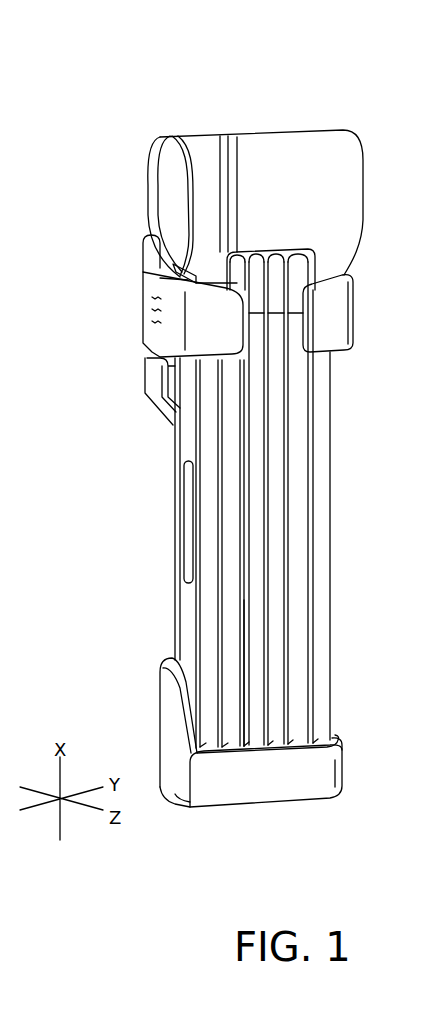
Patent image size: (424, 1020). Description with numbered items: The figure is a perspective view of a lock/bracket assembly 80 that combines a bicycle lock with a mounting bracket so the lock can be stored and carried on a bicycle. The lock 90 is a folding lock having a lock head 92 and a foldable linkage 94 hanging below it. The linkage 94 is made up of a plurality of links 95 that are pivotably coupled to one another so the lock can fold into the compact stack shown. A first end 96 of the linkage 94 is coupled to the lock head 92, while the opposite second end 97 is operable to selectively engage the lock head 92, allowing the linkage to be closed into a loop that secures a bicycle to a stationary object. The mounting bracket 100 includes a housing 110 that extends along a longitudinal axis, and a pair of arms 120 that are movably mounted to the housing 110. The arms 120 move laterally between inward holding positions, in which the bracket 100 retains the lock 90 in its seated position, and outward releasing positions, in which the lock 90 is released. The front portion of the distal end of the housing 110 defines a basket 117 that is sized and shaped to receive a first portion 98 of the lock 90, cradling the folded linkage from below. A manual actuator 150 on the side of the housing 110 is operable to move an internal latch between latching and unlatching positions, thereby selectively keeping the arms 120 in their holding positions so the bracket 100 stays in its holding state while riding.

The lock/bracket assembly 80 is at (188, 90).
The lock 90 is at (122, 158).
The lock head 92 is at (364, 156).
The foldable linkage 94 is at (166, 497).
The links 95 is at (248, 592).
The first end 96 is at (350, 270).
The second end 97 is at (146, 245).
The first portion 98 is at (278, 344).
The mounting bracket 100 is at (126, 357).
The housing 110 is at (162, 433).
The basket 117 is at (150, 745).
The arms 120 is at (143, 305).
The manual actuator 150 is at (145, 395).